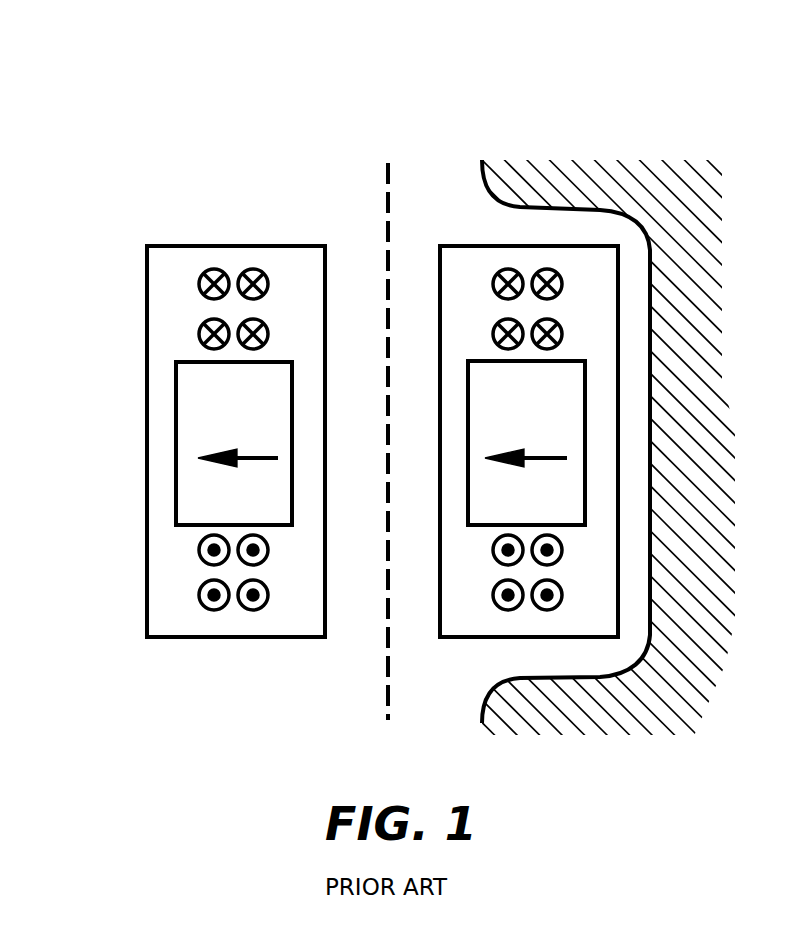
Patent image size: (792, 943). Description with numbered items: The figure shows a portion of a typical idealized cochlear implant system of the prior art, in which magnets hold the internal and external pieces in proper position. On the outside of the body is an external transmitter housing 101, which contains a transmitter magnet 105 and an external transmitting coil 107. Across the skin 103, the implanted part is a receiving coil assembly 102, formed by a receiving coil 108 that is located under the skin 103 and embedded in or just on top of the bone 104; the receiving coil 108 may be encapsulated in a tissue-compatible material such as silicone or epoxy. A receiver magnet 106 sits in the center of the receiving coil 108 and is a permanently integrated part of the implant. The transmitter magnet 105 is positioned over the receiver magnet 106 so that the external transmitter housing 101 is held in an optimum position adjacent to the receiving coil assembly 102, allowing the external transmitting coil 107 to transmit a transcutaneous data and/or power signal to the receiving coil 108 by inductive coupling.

The external transmitter housing 101 is at (162, 245).
The receiving coil assembly 102 is at (458, 245).
The skin 103 is at (385, 182).
The bone 104 is at (618, 213).
The transmitter magnet 105 is at (222, 391).
The receiver magnet 106 is at (515, 393).
The external transmitting coil 107 is at (215, 270).
The receiving coil 108 is at (545, 270).